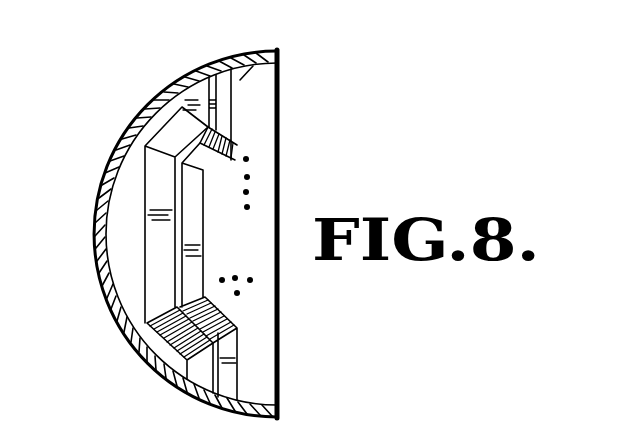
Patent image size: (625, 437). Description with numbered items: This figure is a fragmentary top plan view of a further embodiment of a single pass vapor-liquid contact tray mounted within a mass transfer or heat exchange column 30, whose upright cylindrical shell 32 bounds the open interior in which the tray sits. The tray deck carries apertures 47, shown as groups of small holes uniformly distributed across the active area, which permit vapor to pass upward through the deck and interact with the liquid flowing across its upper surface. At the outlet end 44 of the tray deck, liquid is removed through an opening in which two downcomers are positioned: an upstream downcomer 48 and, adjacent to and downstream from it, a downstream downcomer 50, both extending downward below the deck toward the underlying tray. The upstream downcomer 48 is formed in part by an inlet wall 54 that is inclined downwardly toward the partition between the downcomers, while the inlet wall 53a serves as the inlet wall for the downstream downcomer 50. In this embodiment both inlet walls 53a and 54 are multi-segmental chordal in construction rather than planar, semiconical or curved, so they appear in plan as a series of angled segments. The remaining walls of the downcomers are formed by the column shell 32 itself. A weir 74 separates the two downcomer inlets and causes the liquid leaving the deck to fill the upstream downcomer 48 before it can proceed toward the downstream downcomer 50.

The mass transfer or heat exchange column 30 is at (137, 115).
The upright cylindrical shell 32 is at (97, 212).
The outlet end 44 is at (250, 51).
The apertures 47 is at (263, 192).
The upstream downcomer 48 is at (192, 223).
The downstream downcomer 50 is at (135, 282).
The inlet wall 53a is at (157, 188).
The inlet wall 54 is at (227, 117).
The weir 74 is at (222, 147).